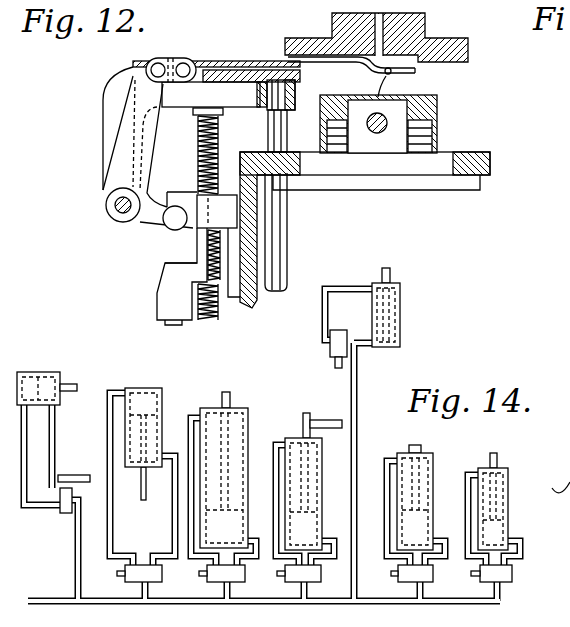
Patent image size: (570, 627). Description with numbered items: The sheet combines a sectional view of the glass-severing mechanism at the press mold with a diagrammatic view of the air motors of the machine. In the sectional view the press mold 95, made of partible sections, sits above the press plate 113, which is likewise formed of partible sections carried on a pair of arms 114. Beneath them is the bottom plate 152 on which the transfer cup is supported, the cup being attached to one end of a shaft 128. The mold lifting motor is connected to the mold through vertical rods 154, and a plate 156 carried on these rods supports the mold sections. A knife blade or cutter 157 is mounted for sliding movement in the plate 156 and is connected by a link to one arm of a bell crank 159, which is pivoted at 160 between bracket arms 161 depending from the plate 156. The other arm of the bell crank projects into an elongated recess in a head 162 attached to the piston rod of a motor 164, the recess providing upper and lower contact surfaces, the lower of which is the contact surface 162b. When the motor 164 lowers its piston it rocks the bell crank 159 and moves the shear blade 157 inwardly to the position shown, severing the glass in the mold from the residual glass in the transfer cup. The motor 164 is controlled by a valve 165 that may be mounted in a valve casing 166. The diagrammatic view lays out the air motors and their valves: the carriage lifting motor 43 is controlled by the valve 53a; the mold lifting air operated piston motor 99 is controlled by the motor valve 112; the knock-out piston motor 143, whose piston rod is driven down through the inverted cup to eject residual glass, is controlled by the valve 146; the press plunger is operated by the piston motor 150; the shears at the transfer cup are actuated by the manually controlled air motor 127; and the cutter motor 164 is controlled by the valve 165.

In FIG. 12, the press mold 95 is at (425, 27).
In FIG. 12, the plate 156 is at (244, 44).
In FIG. 12, the knife blade or cutter 157 is at (368, 67).
In FIG. 12, the press plate 113 is at (418, 93).
In FIG. 12, the arms 114 is at (432, 125).
In FIG. 12, the shaft 128 is at (385, 133).
In FIG. 12, the bottom plate 152 is at (418, 180).
In FIG. 12, the vertical rods 154 is at (282, 231).
In FIG. 12, the bracket arms 161 is at (103, 100).
In FIG. 12, the bell crank 159 is at (120, 147).
In FIG. 12, the pivot 160 is at (115, 212).
In FIG. 12, the head 162 is at (165, 303).
In FIG. 12, the lower contact surface 162b is at (182, 265).
In FIG. 14, the motor 164 is at (398, 297).
In FIG. 14, the valve casing 166 is at (332, 360).
In FIG. 14, the air motor 127 is at (43, 372).
In FIG. 14, the piston motor 143 is at (150, 388).
In FIG. 14, the valve 146 is at (135, 575).
In FIG. 14, the carriage lifting motor 43 is at (248, 408).
In FIG. 14, the valve 53a is at (218, 574).
In FIG. 14, the air operated piston motor 99 is at (318, 478).
In FIG. 14, the motor valve 112 is at (298, 574).
In FIG. 14, the piston motor 150 is at (432, 468).
In FIG. 14, the valve 165 is at (500, 578).